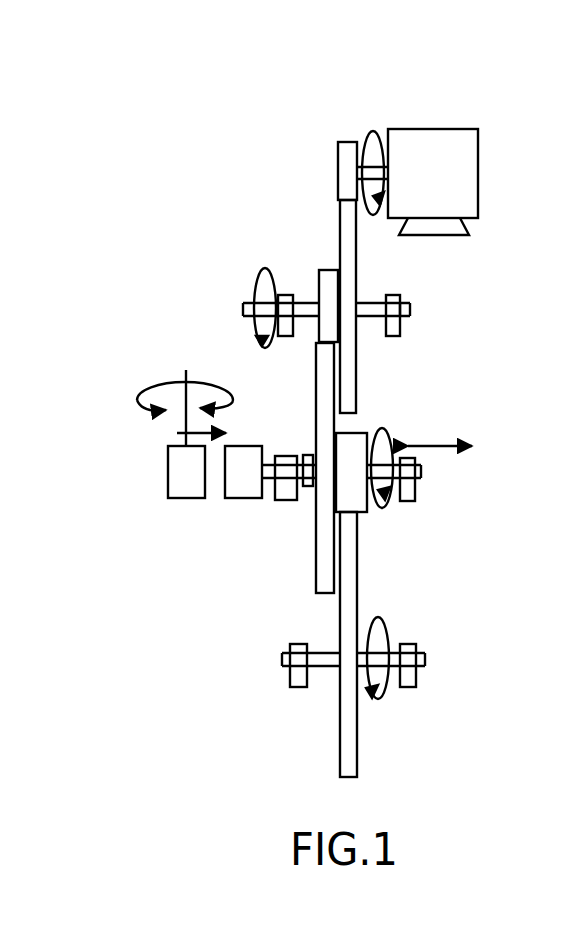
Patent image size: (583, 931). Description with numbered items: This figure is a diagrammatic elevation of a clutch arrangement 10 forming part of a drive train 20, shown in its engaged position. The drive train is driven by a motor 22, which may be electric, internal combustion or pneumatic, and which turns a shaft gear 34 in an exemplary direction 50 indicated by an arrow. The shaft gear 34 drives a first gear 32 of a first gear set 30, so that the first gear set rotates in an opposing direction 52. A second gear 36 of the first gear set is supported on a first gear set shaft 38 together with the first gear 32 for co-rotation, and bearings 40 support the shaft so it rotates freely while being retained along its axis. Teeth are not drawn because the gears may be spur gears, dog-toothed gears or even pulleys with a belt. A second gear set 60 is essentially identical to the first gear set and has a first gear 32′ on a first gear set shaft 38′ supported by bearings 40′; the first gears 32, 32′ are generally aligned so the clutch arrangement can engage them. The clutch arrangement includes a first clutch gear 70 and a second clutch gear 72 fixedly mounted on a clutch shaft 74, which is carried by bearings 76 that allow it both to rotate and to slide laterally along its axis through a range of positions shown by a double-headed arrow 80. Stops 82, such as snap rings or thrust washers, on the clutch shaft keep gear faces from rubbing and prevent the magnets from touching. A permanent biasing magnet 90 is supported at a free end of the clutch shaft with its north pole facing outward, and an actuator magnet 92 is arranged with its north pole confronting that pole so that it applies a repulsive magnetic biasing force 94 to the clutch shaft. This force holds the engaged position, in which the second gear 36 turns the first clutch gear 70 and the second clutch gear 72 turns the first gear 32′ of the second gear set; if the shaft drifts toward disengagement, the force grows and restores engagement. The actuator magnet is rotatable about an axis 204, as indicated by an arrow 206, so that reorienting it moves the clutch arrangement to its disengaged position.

The clutch arrangement 10 is at (480, 379).
The drive train 20 is at (436, 290).
The motor 22 is at (418, 191).
The first gear set 30 is at (306, 270).
The first gear 32 is at (340, 210).
The shaft gear 34 is at (345, 142).
The second gear 36 is at (319, 272).
The first gear set shaft 38 is at (410, 304).
The bearings 40 is at (263, 352).
The direction of rotation of shaft gear 50 is at (378, 134).
The opposing direction of rotation 52 is at (254, 298).
The second gear set 60 is at (358, 600).
The first clutch gear 70 is at (316, 354).
The second clutch gear 72 is at (360, 432).
The clutch shaft 74 is at (420, 466).
The bearings 76 is at (408, 501).
The double-headed arrow 80 is at (440, 440).
The stops 82 is at (306, 455).
The permanent magnet 90 is at (242, 499).
The actuator magnet 92 is at (168, 456).
The repulsive magnetic biasing force 94 is at (177, 433).
The axis 204 is at (183, 372).
The arrow 206 is at (137, 400).
The first gear 32′ is at (357, 758).
The first gear set shaft 38′ is at (425, 660).
The bearings 40′ is at (408, 688).